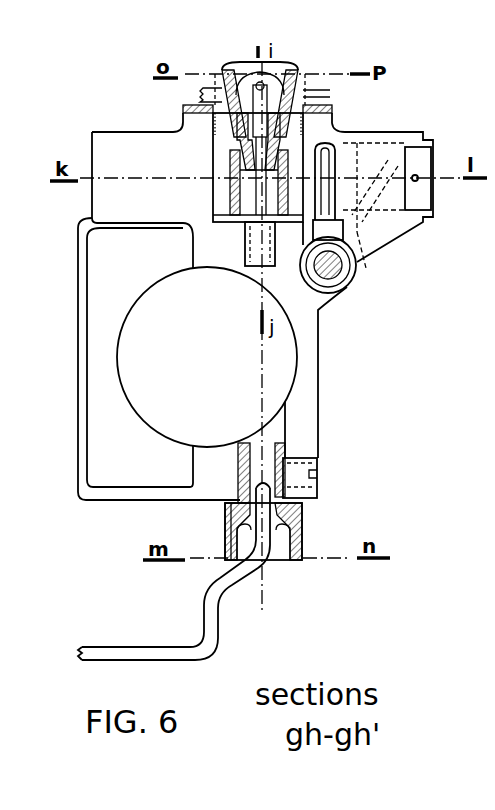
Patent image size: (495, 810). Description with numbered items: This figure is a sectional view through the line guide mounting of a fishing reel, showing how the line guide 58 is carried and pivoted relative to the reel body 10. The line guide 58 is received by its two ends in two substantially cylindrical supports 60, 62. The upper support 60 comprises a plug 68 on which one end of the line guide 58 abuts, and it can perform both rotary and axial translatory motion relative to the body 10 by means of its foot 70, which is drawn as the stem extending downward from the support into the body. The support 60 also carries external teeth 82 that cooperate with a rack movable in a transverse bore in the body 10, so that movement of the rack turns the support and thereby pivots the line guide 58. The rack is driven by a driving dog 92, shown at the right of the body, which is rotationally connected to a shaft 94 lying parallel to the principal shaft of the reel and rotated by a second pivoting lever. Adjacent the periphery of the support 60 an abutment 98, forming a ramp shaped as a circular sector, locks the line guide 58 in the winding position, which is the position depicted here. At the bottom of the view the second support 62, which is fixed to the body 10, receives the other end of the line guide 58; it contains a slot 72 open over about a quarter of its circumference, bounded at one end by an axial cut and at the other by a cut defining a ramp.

The body 10 is at (148, 140).
The line guide 58 is at (243, 83).
The support 60 is at (287, 72).
The support 62 is at (300, 524).
The plug 68 is at (257, 197).
The foot 70 is at (253, 258).
The slot 72 is at (232, 540).
The external teeth 82 is at (235, 190).
The driving dog 92 is at (333, 146).
The shaft 94 is at (348, 274).
The abutment 98 is at (303, 93).